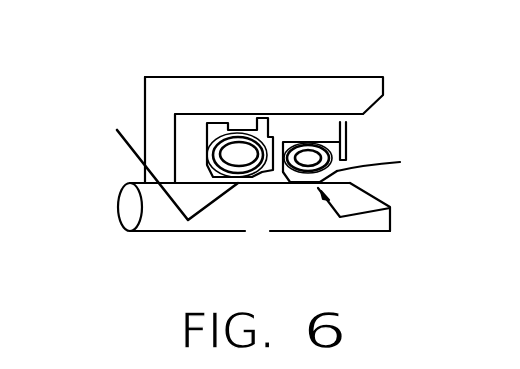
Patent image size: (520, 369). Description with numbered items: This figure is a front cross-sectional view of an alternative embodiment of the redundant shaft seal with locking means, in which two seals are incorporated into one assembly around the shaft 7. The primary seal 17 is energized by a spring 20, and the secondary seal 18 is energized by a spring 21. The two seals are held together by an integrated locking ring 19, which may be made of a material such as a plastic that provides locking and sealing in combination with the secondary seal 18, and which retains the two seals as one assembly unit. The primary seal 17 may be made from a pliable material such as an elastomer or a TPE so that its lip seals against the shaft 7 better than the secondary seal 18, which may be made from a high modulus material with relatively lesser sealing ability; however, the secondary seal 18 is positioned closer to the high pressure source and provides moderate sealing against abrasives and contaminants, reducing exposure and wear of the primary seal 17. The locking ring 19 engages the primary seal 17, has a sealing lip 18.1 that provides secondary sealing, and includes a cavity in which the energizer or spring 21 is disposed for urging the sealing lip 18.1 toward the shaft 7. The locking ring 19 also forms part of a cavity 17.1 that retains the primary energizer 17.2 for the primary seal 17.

The shaft 7 is at (157, 222).
The primary seal 17 is at (204, 143).
The cavity 17.1 is at (237, 155).
The primary energizer 17.2 is at (212, 132).
The secondary seal 18 is at (383, 203).
The sealing lip 18.1 is at (380, 163).
The locking ring 19 is at (346, 140).
The spring 20 is at (264, 126).
The spring 21 is at (325, 131).